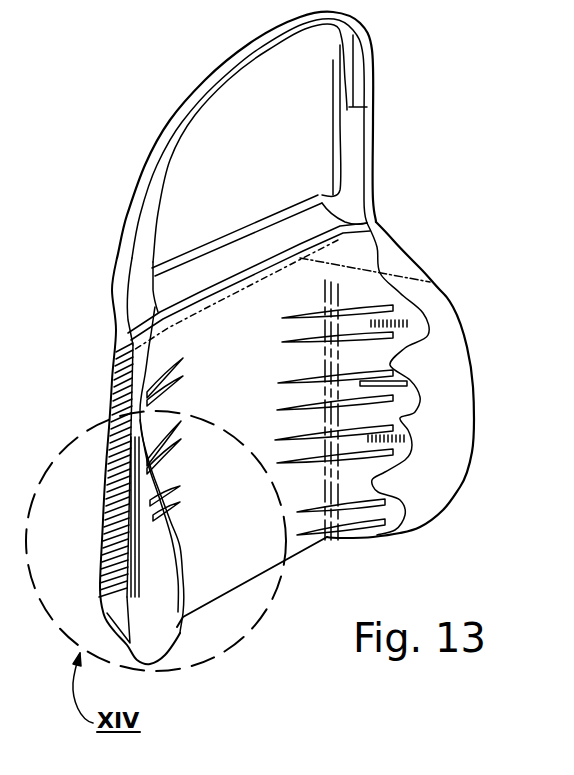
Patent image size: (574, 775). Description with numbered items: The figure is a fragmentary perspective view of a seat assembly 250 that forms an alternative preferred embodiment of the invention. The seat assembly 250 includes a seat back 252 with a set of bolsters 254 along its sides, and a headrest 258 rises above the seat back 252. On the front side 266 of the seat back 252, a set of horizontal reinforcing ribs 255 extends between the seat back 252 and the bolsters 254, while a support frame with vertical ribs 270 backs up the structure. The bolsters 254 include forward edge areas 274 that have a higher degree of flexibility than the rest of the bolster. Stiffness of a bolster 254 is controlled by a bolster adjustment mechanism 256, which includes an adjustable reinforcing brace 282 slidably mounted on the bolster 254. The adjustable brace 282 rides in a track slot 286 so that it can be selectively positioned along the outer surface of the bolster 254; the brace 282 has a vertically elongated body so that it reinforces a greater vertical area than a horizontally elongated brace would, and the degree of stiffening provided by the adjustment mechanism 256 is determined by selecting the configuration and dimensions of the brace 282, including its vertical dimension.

The seat assembly 250 is at (428, 110).
The seat back 252 is at (283, 284).
The bolsters 254 is at (453, 303).
The horizontal reinforcing ribs 255 is at (328, 540).
The bolster adjustment mechanism 256 is at (110, 467).
The headrest 258 is at (318, 57).
The front side 266 is at (262, 332).
The vertical ribs 270 is at (110, 570).
The forward edge areas 274 is at (458, 397).
The adjustable reinforcing brace 282 is at (123, 512).
The track slot 286 is at (407, 380).